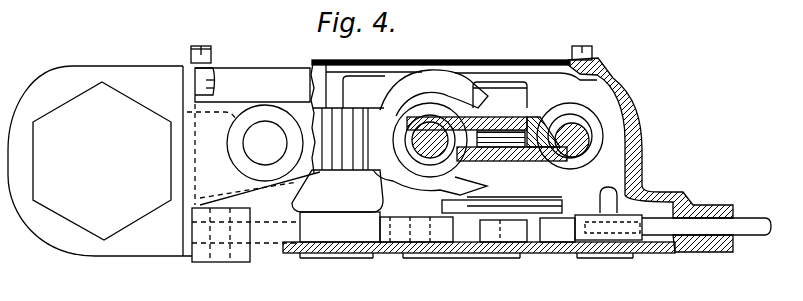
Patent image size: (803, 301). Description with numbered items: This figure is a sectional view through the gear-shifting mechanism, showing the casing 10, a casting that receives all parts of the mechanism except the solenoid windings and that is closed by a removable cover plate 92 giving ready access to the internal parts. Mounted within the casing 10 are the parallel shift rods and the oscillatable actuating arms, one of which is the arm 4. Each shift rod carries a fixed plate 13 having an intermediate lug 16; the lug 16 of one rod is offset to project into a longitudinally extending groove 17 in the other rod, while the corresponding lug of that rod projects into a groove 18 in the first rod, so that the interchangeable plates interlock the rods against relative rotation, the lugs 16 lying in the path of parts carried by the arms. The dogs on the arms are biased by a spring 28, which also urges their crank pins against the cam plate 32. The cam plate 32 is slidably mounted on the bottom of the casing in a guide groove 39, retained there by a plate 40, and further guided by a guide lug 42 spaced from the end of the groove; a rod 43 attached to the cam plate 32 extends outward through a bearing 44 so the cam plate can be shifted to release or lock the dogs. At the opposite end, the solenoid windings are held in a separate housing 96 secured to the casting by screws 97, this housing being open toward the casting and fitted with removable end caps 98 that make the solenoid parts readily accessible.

The housing 96 is at (73, 82).
The screws 97 is at (215, 87).
The end caps 98 is at (137, 220).
The actuating arm 4 is at (396, 85).
The cover plate 92 is at (463, 58).
The groove 18 is at (437, 122).
The spring 28 is at (490, 124).
The plate 13 is at (529, 120).
The intermediate lug 16 is at (548, 118).
The casing 10 is at (633, 104).
The groove 17 is at (566, 166).
The guide groove 39 is at (350, 232).
The plate 40 is at (401, 248).
The guide lug 42 is at (521, 250).
The cam plate 32 is at (618, 250).
The bearing 44 is at (721, 252).
The rod 43 is at (750, 230).